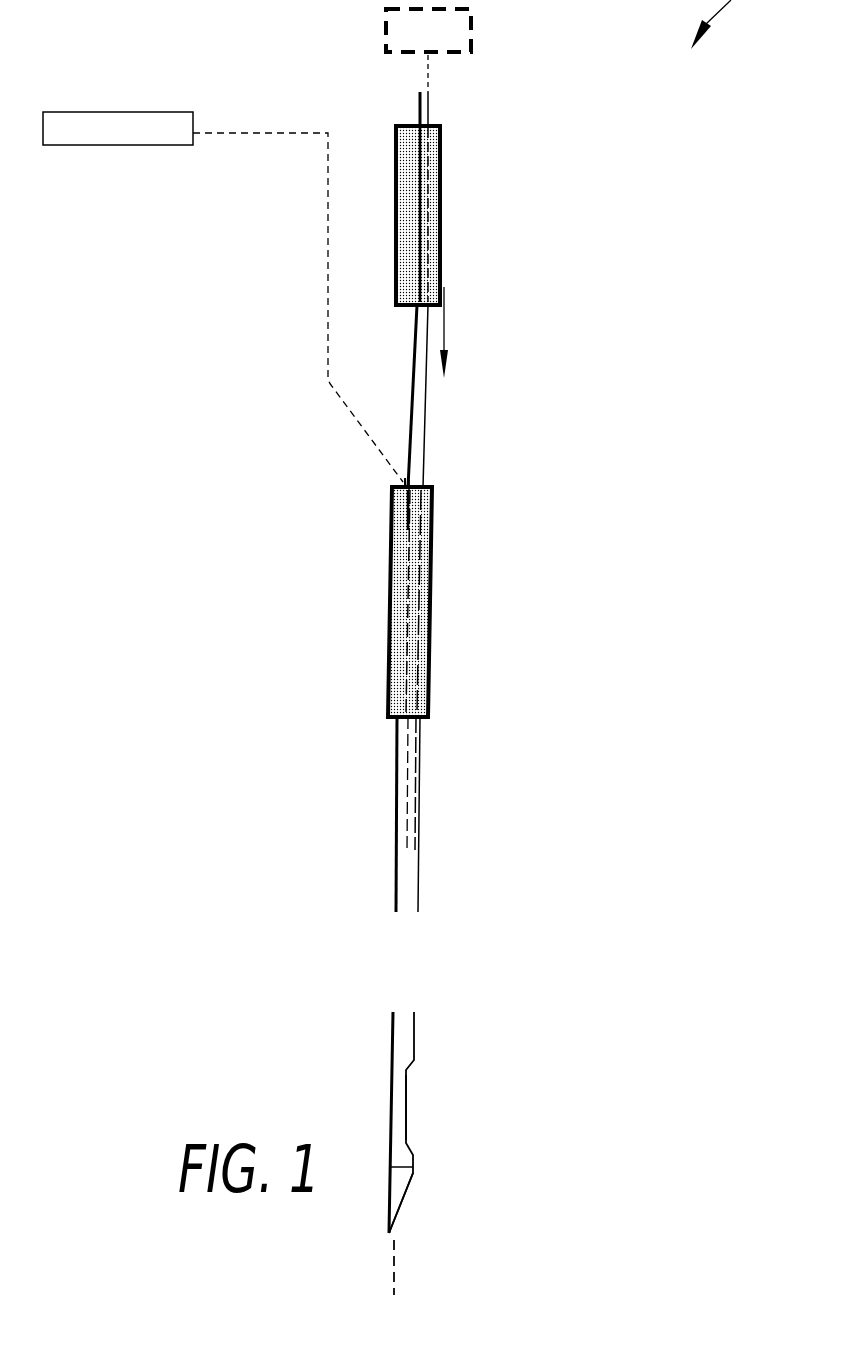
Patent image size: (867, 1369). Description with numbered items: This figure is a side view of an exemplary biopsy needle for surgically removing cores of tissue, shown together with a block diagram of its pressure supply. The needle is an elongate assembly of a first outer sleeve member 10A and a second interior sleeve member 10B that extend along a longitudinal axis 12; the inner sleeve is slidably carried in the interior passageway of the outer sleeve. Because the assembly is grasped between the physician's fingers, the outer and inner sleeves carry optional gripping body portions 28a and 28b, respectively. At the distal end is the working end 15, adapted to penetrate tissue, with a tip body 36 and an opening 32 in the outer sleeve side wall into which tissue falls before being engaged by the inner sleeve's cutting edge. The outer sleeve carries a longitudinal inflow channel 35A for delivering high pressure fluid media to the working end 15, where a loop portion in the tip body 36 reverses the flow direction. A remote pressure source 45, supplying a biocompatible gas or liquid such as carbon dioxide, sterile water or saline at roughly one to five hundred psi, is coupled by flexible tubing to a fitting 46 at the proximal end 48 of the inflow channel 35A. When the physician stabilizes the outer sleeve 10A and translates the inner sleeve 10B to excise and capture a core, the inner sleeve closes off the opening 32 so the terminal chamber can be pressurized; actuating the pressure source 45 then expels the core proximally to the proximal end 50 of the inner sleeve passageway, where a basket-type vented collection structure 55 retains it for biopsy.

The collection structure 55 is at (384, 33).
The pressure source 45 is at (223, 297).
The proximal end 50 is at (418, 92).
The gripping body portion 28b is at (441, 256).
The second interior sleeve member 10B is at (427, 425).
The fitting 46 is at (405, 480).
The proximal end 48 is at (395, 492).
The inflow channel 35A is at (402, 510).
The gripping body portion 28a is at (431, 607).
The first outer sleeve member 10A is at (421, 862).
The distal working end 15 is at (395, 1107).
The opening 32 is at (408, 1122).
The tip body 36 is at (398, 1192).
The longitudinal axis 12 is at (394, 1247).